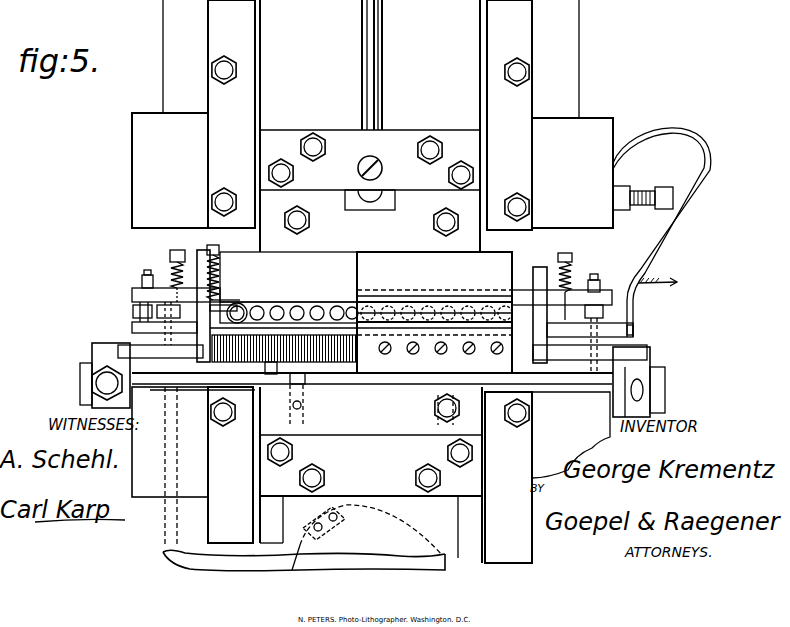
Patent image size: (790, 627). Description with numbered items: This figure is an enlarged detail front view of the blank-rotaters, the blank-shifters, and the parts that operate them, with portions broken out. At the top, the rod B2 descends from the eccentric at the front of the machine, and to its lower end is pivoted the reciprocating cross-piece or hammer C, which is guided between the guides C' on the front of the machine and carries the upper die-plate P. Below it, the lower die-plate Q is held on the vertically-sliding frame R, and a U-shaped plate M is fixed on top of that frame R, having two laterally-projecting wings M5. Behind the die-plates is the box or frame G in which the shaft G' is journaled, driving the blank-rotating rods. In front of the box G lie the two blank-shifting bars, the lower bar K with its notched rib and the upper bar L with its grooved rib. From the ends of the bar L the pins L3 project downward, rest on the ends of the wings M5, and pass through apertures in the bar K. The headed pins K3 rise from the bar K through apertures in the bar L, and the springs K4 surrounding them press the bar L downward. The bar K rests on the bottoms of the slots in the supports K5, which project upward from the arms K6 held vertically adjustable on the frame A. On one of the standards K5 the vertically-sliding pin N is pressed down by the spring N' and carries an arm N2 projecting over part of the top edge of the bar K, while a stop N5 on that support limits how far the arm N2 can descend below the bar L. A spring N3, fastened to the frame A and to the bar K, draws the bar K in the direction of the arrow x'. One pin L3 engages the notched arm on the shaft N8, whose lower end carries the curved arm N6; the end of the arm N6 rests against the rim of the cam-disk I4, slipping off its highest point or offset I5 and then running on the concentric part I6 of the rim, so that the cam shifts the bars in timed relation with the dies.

The guides C' is at (372, 115).
The rod B2 is at (370, 126).
The reciprocating cross-piece or hammer C is at (370, 178).
The upper die-plate P is at (434, 312).
The lower die-plate Q is at (436, 330).
The shaft G' is at (284, 290).
The box or frame G is at (284, 354).
The stop N5 is at (203, 306).
The vertically-sliding pin N is at (221, 272).
The spring N' is at (225, 292).
The arm N2 is at (233, 300).
The pins K3 is at (565, 253).
The springs K4 is at (168, 256).
The supports K5 is at (538, 307).
The upper bar L is at (132, 292).
The pins L3 is at (358, 294).
The lower bar K is at (600, 323).
The shaft N8 is at (141, 355).
The wings M5 is at (590, 363).
The arms K6 is at (648, 362).
The spring N3 is at (702, 196).
The arrow x' is at (657, 272).
The U-shaped plate M is at (372, 399).
The vertically-sliding frame R is at (307, 475).
The frame A is at (547, 477).
The curved arm N6 is at (225, 558).
The concentric rim part I6 is at (304, 547).
The highest point or offset I5 is at (371, 527).
The cam-disk I4 is at (301, 557).